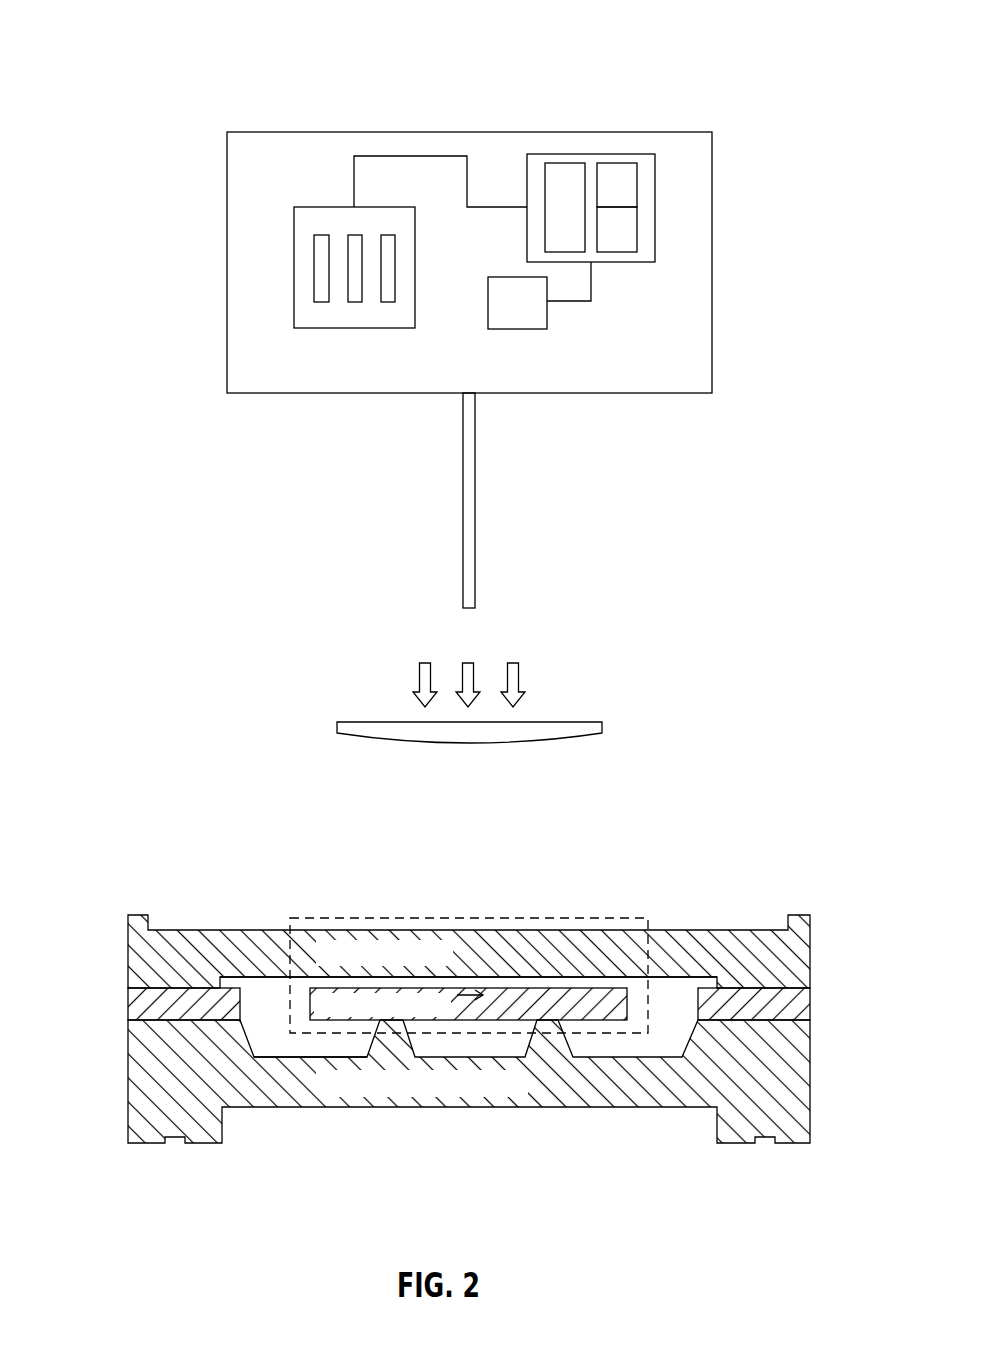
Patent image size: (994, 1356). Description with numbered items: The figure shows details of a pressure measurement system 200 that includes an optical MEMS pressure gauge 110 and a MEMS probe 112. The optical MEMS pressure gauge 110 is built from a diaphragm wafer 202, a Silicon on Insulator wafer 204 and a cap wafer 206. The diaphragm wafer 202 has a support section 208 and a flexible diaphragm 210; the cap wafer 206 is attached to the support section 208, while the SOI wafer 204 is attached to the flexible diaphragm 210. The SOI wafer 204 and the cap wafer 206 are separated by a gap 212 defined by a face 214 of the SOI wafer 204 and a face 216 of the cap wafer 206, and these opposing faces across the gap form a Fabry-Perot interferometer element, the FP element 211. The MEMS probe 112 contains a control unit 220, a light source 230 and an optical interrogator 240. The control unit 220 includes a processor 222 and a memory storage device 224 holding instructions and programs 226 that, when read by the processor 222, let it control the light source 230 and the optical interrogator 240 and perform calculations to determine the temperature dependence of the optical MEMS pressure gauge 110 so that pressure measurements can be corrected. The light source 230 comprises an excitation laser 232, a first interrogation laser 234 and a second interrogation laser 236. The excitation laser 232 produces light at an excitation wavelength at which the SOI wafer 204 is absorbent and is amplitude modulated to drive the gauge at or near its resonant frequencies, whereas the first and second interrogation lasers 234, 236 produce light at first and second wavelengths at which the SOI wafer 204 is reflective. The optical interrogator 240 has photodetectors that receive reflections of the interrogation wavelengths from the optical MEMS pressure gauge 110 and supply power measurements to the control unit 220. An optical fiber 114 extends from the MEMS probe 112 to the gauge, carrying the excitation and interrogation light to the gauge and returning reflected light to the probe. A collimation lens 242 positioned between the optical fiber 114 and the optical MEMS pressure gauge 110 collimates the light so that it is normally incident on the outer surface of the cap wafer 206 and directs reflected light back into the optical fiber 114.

The pressure measurement system 200 is at (129, 41).
The optical MEMS pressure gauge 110 is at (129, 826).
The MEMS probe 112 is at (272, 131).
The optical fiber 114 is at (475, 467).
The control unit 220 is at (632, 154).
The processor 222 is at (567, 163).
The memory storage device 224 is at (640, 183).
The instructions and programs 226 is at (640, 226).
The light source 230 is at (317, 206).
The excitation laser 232 is at (320, 303).
The first interrogation laser 234 is at (353, 303).
The second interrogation laser 236 is at (387, 303).
The optical interrogator 240 is at (528, 330).
The collimation lens 242 is at (570, 722).
The diaphragm wafer 202 is at (810, 1052).
The SOI wafer 204 is at (628, 1003).
The cap wafer 206 is at (810, 940).
The support section 208 is at (792, 1098).
The flexible diaphragm 210 is at (608, 1108).
The FP element 211 is at (313, 1023).
The gap 212 is at (593, 973).
The face of the SOI wafer 214 is at (318, 989).
The face of the cap wafer 216 is at (250, 977).